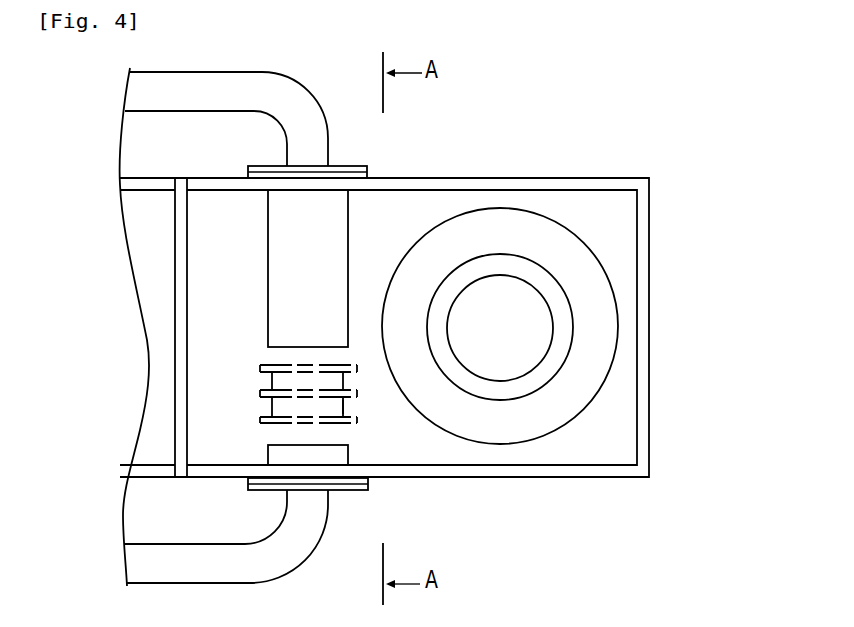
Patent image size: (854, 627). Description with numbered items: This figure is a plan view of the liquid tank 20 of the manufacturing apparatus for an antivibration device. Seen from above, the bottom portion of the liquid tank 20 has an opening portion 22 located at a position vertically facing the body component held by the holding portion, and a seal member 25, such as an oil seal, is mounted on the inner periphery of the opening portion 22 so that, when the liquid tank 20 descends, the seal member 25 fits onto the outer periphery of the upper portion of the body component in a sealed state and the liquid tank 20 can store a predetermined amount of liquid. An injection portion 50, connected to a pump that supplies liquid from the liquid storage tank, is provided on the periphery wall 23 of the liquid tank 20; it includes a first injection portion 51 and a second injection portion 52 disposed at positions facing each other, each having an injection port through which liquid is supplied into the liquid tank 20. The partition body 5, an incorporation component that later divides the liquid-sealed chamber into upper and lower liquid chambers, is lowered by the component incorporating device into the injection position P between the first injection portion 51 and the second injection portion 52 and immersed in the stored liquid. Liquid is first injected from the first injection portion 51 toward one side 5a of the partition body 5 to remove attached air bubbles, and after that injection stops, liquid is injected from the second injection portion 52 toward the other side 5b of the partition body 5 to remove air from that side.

The liquid tank 20 is at (503, 178).
The opening portion 22 is at (610, 300).
The periphery wall 23 is at (563, 193).
The seal member 25 is at (558, 352).
The partition body 5 is at (222, 388).
The one side of the partition body 5a is at (282, 365).
The other side of the partition body 5b is at (282, 422).
The injection portion 50 is at (191, 362).
The first injection portion 51 is at (277, 262).
The second injection portion 52 is at (268, 455).
The injection position P is at (353, 407).